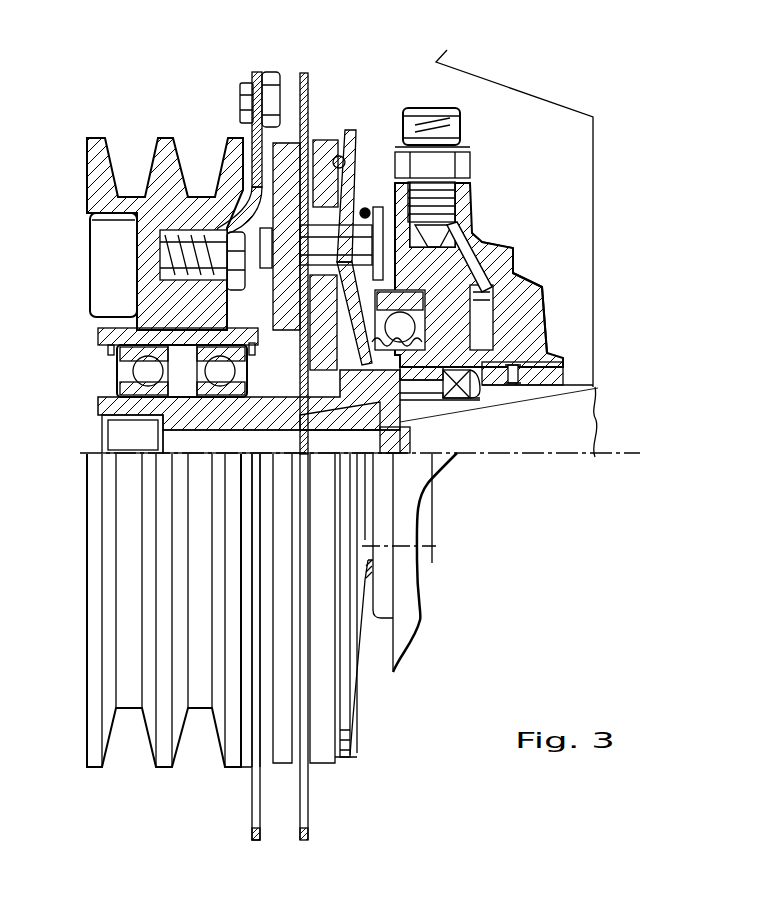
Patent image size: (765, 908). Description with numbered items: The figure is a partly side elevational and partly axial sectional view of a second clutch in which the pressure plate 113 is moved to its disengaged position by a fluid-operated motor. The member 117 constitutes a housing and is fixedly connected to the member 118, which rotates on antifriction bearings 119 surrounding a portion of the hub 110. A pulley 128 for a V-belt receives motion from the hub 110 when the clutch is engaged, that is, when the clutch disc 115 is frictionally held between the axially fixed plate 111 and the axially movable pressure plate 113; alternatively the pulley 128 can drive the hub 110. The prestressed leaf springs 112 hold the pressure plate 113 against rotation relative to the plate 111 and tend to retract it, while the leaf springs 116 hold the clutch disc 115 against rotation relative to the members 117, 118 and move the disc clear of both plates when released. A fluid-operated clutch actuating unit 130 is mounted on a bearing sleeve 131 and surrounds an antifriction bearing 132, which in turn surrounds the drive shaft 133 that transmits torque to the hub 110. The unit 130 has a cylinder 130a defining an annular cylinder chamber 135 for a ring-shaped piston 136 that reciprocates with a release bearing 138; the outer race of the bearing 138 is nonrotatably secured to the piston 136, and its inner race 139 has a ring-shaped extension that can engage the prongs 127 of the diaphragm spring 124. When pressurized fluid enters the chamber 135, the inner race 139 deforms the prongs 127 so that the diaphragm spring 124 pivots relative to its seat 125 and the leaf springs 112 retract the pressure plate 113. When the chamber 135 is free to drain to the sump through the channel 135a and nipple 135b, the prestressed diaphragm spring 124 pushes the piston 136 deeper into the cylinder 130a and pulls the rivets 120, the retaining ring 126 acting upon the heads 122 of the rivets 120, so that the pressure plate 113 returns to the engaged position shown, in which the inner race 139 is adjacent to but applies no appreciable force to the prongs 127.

The hub 110 is at (118, 398).
The axially fixed plate 111 is at (333, 763).
The prestressed leaf springs 112 is at (273, 280).
The pressure plate 113 is at (277, 762).
The clutch disc 115 is at (308, 822).
The prestressed leaf springs 116 is at (266, 75).
The housing member 117 is at (252, 137).
The member 118 is at (107, 322).
The antifriction bearings 119 is at (118, 348).
The rivets 120 is at (440, 230).
The heads of the rivets 122 is at (430, 208).
The diaphragm spring 124 is at (353, 715).
The seat 125 is at (338, 158).
The retaining ring 126 is at (364, 207).
The prongs 127 is at (362, 275).
The pulley 128 is at (163, 142).
The fluid-operated clutch actuating unit 130 is at (552, 340).
The cylinder 130a is at (520, 268).
The bearing sleeve 131 is at (563, 375).
The antifriction bearing 132 is at (455, 402).
The drive shaft 133 is at (573, 433).
The annular cylinder chamber 135 is at (482, 302).
The channel 135a is at (500, 235).
The nipple 135b is at (538, 188).
The ring-shaped piston 136 is at (470, 360).
The release bearing 138 is at (493, 256).
The inner race 139 is at (420, 352).